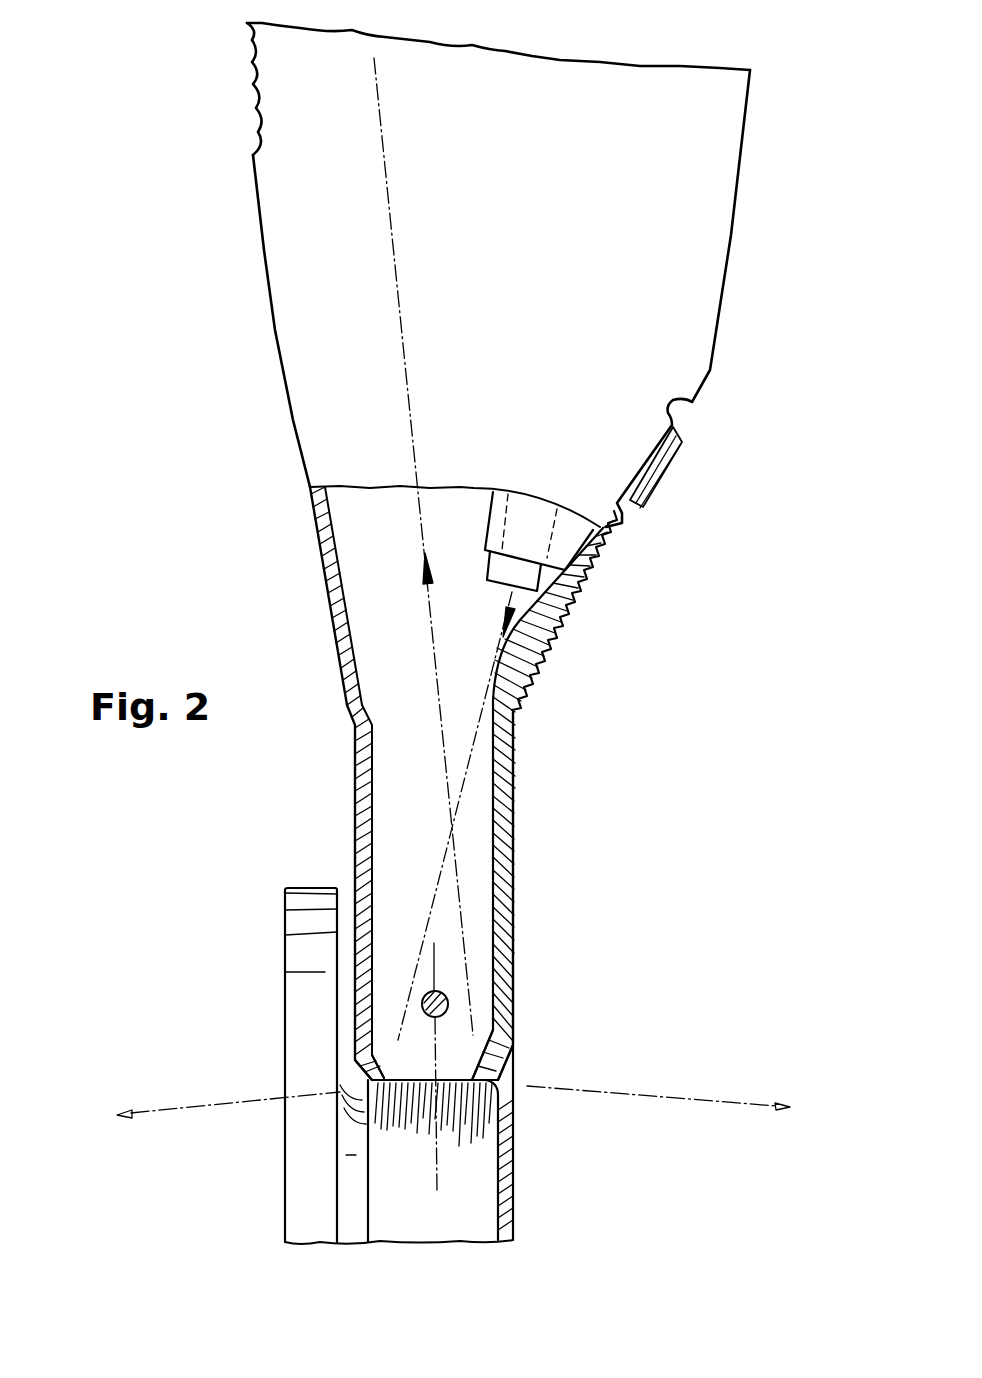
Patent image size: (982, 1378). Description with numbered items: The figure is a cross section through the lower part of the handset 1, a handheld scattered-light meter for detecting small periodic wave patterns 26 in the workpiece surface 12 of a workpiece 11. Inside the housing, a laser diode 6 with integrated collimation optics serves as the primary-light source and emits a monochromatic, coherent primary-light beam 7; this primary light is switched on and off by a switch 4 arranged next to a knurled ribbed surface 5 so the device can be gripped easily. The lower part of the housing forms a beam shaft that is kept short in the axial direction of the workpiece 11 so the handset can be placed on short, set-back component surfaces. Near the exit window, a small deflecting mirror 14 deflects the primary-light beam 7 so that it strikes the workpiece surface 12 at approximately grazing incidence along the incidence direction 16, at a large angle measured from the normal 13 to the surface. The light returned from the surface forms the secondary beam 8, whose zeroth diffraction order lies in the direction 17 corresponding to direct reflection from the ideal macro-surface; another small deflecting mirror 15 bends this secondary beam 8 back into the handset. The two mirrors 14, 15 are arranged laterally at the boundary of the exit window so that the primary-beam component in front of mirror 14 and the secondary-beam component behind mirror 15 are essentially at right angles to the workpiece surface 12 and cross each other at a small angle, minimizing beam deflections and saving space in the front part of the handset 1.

The handset 1 is at (352, 344).
The switch 4 is at (648, 488).
The knurled ribbed surface 5 is at (248, 73).
The laser diode 6 is at (492, 572).
The primary-light beam 7 is at (467, 793).
The secondary beam 8 is at (427, 631).
The workpiece 11 is at (283, 995).
The workpiece surface 12 is at (475, 1217).
The normal 13 is at (430, 1030).
The deflecting mirror 14 is at (378, 1063).
The secondary-beam deflecting mirror 15 is at (513, 1035).
The incidence direction 16 is at (697, 1078).
The direction of the secondary beam 17 is at (217, 1110).
The periodic wave patterns 26 is at (513, 1107).